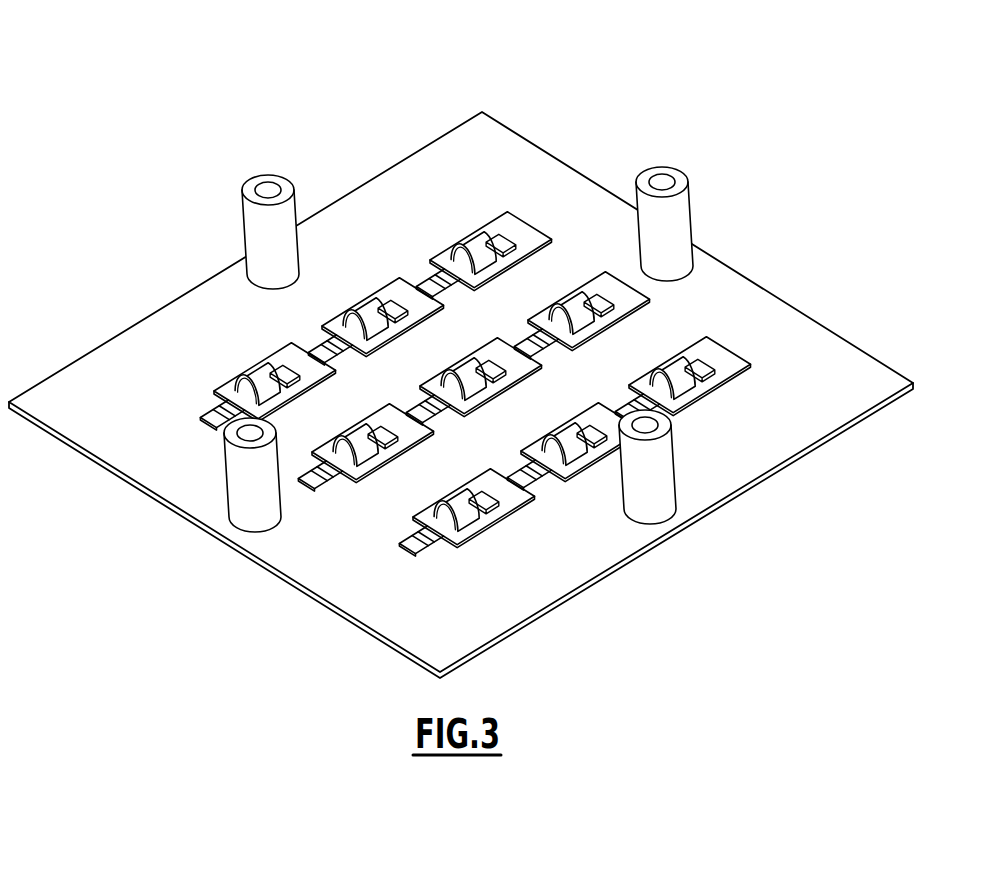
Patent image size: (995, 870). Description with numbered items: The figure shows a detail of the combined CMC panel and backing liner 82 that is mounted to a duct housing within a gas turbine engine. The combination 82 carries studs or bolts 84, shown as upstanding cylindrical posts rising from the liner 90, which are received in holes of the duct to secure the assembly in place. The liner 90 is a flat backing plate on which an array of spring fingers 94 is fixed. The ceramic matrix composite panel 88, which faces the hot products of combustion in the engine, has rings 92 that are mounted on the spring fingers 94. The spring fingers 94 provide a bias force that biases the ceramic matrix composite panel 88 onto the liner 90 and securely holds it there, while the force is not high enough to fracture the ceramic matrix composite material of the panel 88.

The combined CMC panel and backing liner 82 is at (551, 98).
The studs or bolts 84 is at (678, 180).
The panel 88 is at (290, 360).
The liner 90 is at (186, 494).
The rings 92 is at (249, 373).
The spring fingers 94 is at (201, 418).